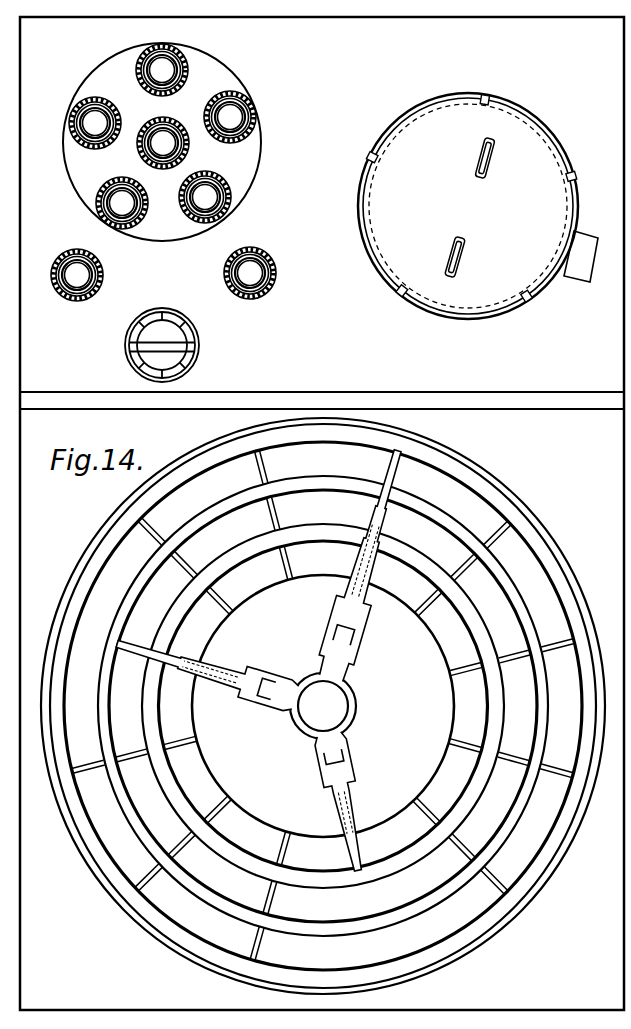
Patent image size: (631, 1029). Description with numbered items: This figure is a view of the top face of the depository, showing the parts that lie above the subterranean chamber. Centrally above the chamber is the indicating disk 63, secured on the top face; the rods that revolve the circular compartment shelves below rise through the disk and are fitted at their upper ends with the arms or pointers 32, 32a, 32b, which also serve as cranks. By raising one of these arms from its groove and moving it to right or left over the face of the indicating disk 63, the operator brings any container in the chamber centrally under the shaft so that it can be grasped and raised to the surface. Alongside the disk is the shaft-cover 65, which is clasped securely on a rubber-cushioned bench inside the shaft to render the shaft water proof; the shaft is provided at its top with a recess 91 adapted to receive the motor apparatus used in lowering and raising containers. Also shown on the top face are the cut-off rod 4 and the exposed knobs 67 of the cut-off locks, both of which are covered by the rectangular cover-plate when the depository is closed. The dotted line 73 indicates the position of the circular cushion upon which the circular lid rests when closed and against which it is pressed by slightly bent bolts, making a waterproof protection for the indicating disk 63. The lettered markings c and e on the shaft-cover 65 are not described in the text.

The cut-off rod 4 is at (150, 345).
The knobs of the cut-off locks 67 is at (163, 172).
The shaft-cover 65 is at (468, 206).
The recess 91 is at (581, 256).
The slot c is at (475, 157).
The slot e is at (458, 256).
The circular cushion 73 is at (526, 900).
The indicating disk 63 is at (323, 706).
The arm or pointer 32 is at (335, 802).
The arm or pointer 32a is at (364, 565).
The arm or pointer 32b is at (206, 671).